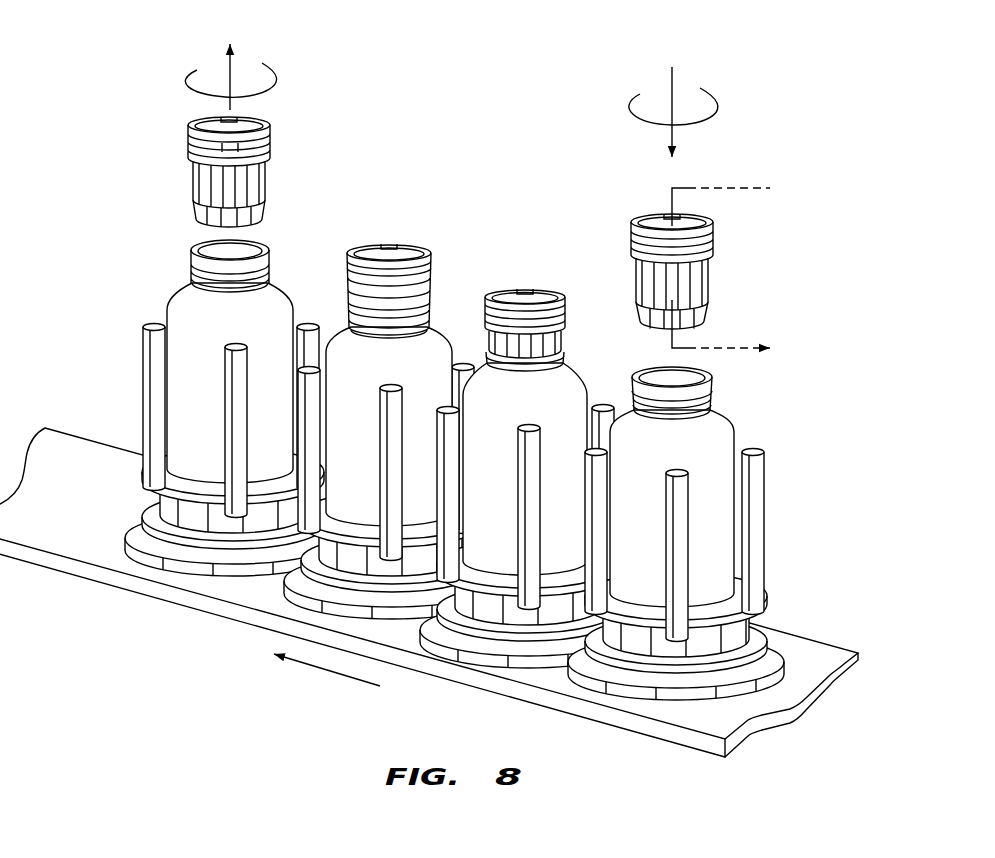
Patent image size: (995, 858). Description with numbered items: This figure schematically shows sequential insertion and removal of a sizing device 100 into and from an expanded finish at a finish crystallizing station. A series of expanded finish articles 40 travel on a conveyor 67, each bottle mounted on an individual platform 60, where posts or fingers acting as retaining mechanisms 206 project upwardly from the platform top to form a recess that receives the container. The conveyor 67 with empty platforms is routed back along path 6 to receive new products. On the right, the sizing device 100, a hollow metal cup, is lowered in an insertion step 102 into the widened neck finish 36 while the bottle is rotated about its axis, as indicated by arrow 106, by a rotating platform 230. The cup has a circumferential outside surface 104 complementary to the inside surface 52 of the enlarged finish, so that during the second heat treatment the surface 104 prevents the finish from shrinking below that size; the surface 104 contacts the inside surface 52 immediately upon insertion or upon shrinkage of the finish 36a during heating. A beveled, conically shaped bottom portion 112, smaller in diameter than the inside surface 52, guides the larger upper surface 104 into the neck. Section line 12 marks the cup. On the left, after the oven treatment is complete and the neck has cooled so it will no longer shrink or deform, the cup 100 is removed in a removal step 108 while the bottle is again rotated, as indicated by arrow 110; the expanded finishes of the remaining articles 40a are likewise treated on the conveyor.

The path 6 is at (330, 668).
The section line 12 is at (741, 274).
The widened neck finish 36 is at (325, 305).
The finish 36a is at (192, 257).
The expanded finish article 40 is at (719, 470).
The container 40a is at (300, 350).
The inside surface 52 is at (666, 384).
The platform 60 is at (729, 574).
The conveyor 67 is at (831, 642).
The sizing device 100 is at (451, 226).
The insertion step 102 is at (673, 71).
The circumferential outside surface 104 is at (268, 173).
The rotation arrow 106 is at (639, 93).
The removal step 108 is at (241, 57).
The rotation arrow 110 is at (194, 68).
The beveled leading/bottom portion 112 is at (263, 207).
The retaining mechanism 206 is at (763, 481).
The rotating platform 230 is at (769, 608).